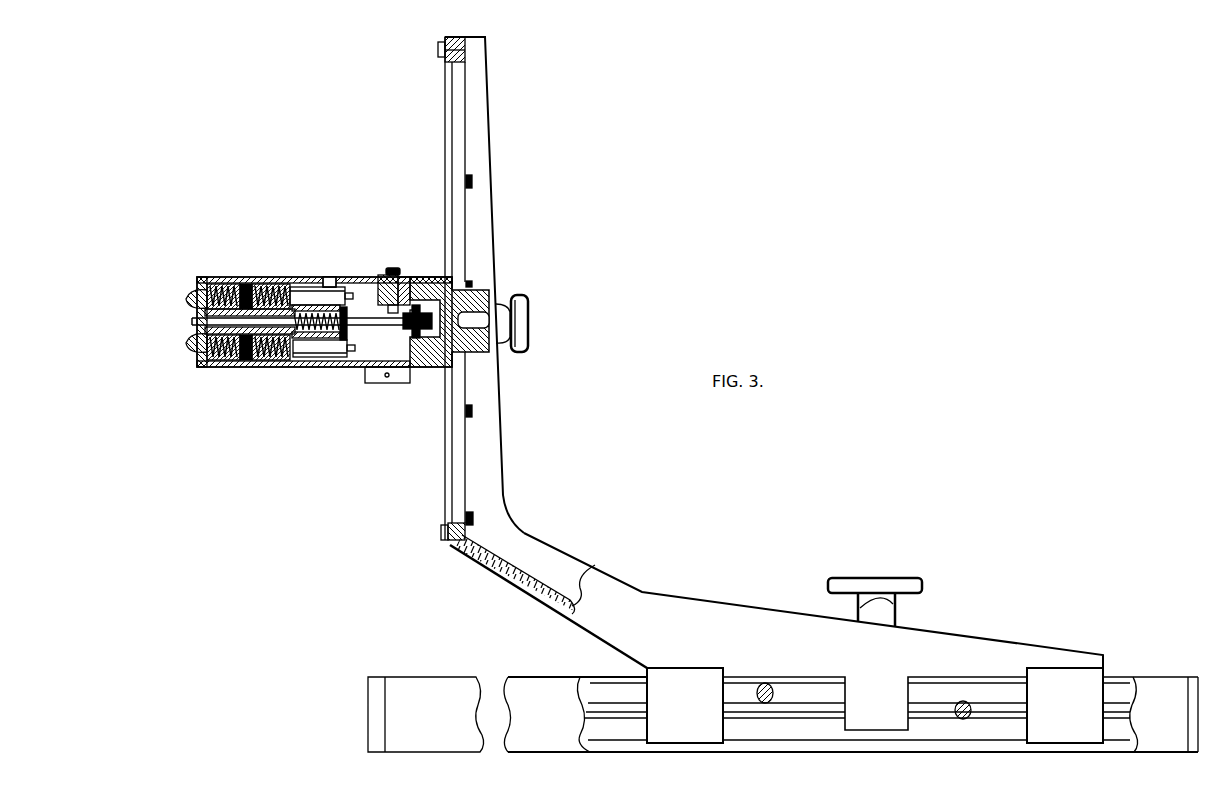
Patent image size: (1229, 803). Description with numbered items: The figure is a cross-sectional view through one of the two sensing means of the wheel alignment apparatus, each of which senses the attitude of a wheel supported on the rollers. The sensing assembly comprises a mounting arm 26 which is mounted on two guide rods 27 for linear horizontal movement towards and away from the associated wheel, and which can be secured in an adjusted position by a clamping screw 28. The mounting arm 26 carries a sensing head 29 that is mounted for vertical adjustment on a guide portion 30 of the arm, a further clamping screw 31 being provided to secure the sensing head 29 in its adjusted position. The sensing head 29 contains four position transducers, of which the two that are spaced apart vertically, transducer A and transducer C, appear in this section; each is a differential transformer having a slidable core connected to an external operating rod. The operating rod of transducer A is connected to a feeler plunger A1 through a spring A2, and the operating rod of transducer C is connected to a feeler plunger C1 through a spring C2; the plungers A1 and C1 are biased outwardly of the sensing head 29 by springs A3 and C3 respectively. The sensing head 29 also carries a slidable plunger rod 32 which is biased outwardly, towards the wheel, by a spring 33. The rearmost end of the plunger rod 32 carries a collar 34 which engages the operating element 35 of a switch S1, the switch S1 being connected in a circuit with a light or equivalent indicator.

The mounting arm 26 is at (614, 596).
The guide rods 27 is at (1007, 697).
The clamping screw 28 is at (910, 612).
The sensing head 29 is at (318, 268).
The guide portion 30 is at (452, 218).
The clamping screw 31 is at (512, 347).
The slidable plunger rod 32 is at (198, 321).
The spring 33 is at (302, 367).
The collar 34 is at (422, 348).
The operating element 35 is at (397, 267).
The transducer A is at (332, 277).
The plunger A1 is at (193, 290).
The spring A2 is at (210, 277).
The spring A3 is at (262, 277).
The transducer C is at (330, 357).
The plunger C1 is at (193, 350).
The spring C2 is at (220, 367).
The spring C3 is at (267, 368).
The switch S1 is at (384, 288).